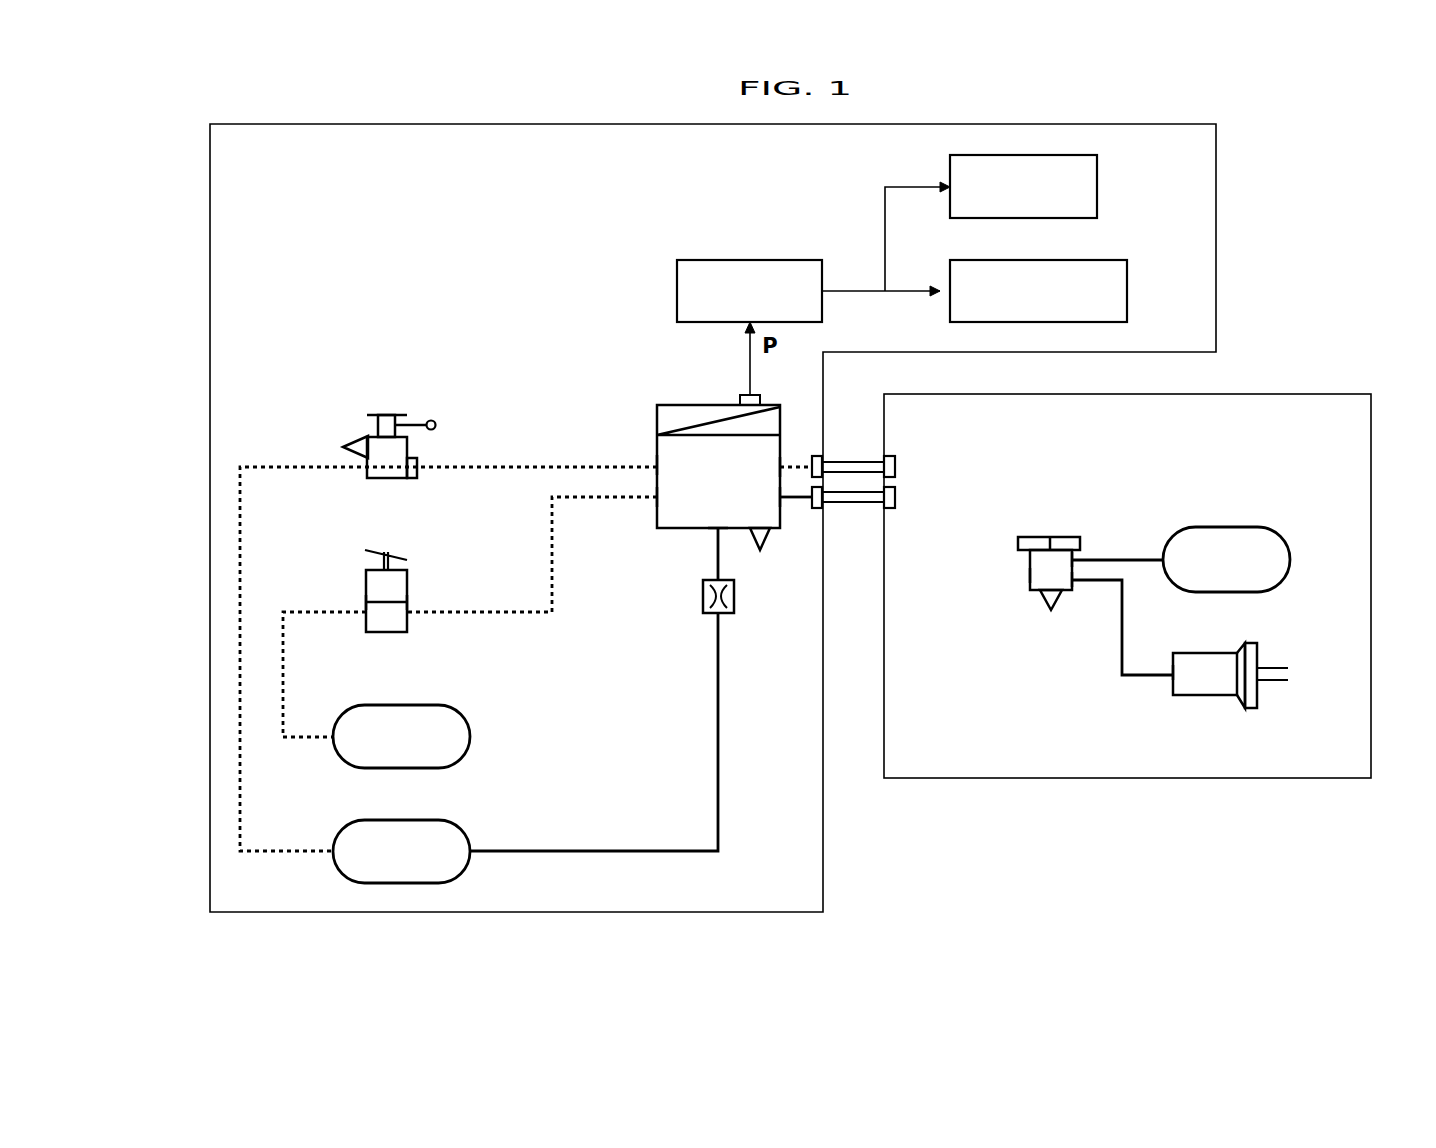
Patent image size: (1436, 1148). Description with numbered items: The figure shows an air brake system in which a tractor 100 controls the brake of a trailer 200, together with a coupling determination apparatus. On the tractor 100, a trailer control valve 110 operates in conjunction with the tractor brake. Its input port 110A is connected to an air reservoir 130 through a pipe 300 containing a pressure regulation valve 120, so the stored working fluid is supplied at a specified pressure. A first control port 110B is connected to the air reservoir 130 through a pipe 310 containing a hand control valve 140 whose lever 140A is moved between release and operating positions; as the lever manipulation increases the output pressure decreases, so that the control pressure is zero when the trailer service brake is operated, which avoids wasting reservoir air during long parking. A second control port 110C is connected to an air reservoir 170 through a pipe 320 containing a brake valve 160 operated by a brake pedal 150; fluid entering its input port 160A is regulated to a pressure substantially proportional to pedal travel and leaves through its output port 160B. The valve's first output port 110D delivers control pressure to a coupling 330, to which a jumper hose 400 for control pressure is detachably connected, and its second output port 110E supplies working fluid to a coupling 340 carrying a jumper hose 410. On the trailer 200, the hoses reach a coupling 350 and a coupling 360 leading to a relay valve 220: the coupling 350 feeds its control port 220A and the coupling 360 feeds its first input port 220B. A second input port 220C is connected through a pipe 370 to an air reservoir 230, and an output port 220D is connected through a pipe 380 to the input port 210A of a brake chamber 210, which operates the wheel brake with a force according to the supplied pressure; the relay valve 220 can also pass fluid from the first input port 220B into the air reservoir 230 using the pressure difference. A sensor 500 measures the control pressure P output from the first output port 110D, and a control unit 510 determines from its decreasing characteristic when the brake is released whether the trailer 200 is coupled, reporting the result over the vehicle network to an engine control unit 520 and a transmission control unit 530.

The tractor 100 is at (1216, 195).
The trailer 200 is at (1310, 394).
The trailer control valve 110 is at (656, 404).
The input port 110A is at (717, 540).
The first control port 110B is at (657, 465).
The second control port 110C is at (657, 500).
The first output port 110D is at (780, 467).
The second output port 110E is at (780, 498).
The pressure regulation valve 120 is at (703, 606).
The air reservoir 130 is at (462, 822).
The hand control valve 140 is at (406, 404).
The lever 140A is at (430, 420).
The brake pedal 150 is at (393, 550).
The brake valve 160 is at (385, 561).
The input port 160A is at (366, 611).
The output port 160B is at (407, 611).
The air reservoir 170 is at (460, 708).
The brake chamber 210 is at (1181, 702).
The input port 210A is at (1173, 678).
The relay valve 220 is at (1058, 556).
The control port 220A is at (1048, 536).
The first input port 220B is at (1030, 578).
The second input port 220C is at (1076, 556).
The output port 220D is at (1074, 586).
The air reservoir 230 is at (1281, 528).
The pipe 300 is at (718, 708).
The pipe 310 is at (288, 467).
The pipe 320 is at (283, 666).
The coupling 330 is at (812, 455).
The coupling 340 is at (812, 510).
The coupling 350 is at (892, 456).
The coupling 360 is at (895, 509).
The pipe 370 is at (1135, 562).
The pipe 380 is at (1122, 655).
The jumper hose 400 is at (851, 462).
The jumper hose 410 is at (851, 502).
The sensor 500 is at (740, 395).
The control unit 510 is at (760, 258).
The engine control unit 520 is at (1097, 176).
The transmission control unit 530 is at (1127, 281).